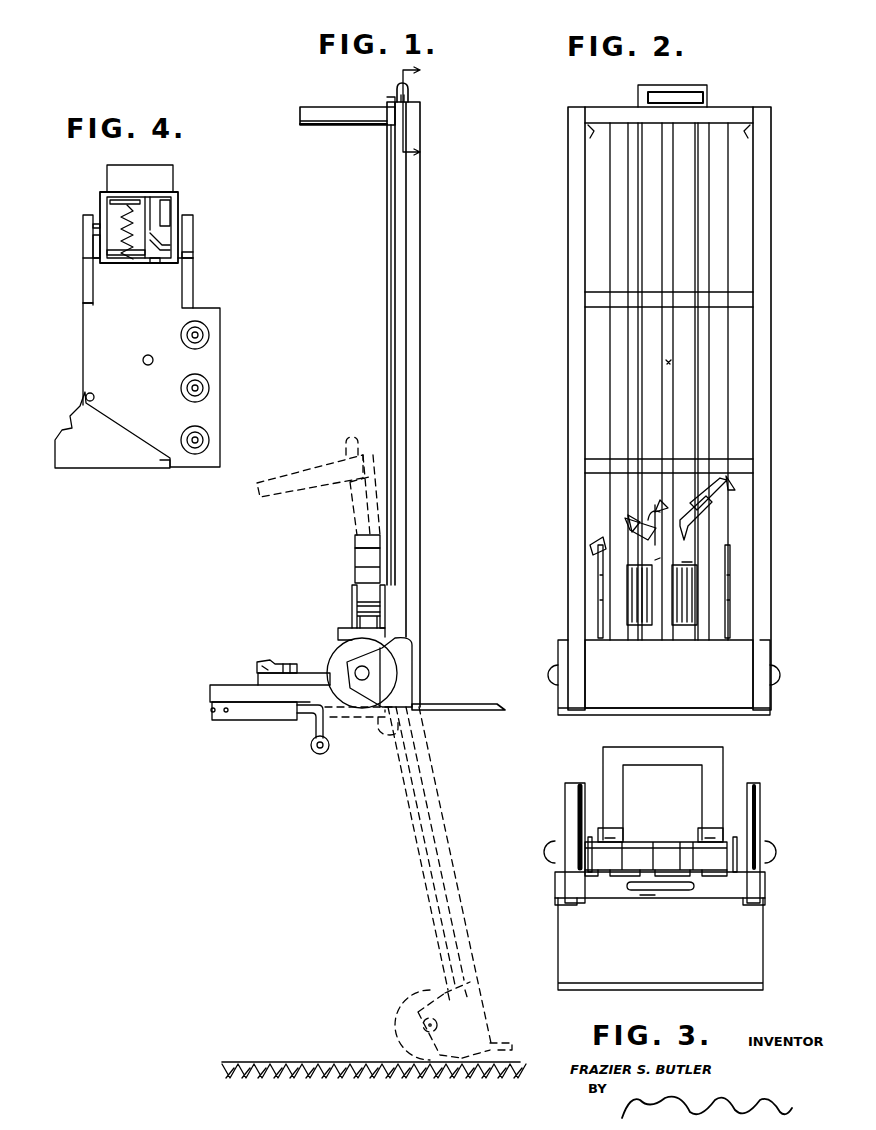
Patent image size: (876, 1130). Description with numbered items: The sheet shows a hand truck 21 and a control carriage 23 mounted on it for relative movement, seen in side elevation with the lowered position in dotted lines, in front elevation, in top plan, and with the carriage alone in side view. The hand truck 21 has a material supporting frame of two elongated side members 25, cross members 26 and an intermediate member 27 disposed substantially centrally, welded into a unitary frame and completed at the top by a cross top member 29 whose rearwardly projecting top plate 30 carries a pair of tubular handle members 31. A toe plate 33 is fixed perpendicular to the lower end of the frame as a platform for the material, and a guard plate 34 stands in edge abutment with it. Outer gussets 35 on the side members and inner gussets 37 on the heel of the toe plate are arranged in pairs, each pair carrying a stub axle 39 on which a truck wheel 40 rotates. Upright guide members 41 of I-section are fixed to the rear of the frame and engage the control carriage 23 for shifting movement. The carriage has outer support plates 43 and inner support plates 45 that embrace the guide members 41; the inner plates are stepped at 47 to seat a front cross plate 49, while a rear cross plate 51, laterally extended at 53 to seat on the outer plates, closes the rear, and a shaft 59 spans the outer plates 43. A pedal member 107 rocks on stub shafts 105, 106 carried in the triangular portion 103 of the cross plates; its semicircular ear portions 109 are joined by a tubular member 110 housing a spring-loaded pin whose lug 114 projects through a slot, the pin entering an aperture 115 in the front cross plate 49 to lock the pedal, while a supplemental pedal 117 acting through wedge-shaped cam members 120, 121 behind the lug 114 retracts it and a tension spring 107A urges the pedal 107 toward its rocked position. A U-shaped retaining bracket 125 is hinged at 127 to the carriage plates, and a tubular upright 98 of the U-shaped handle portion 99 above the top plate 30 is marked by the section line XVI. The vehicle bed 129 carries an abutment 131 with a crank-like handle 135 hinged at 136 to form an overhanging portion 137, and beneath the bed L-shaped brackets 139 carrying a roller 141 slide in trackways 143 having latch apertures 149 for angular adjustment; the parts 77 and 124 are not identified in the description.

In FIG. 1, the hand truck 21 is at (477, 289).
In FIG. 2, the hand truck 21 is at (786, 277).
In FIG. 1, the control carriage 23 is at (349, 587).
In FIG. 4, the control carriage 23 is at (250, 350).
In FIG. 1, the side members 25 is at (414, 223).
In FIG. 2, the side members 25 is at (569, 187).
In FIG. 3, the side members 25 is at (562, 905).
In FIG. 2, the cross members 26 is at (590, 308).
In FIG. 2, the intermediate elongated member 27 is at (668, 390).
In FIG. 2, the cross top member 29 is at (726, 116).
In FIG. 1, the top plate 30 is at (397, 96).
In FIG. 3, the top plate 30 is at (605, 895).
In FIG. 1, the handle members 31 is at (312, 126).
In FIG. 2, the handle members 31 is at (590, 127).
In FIG. 3, the handle members 31 is at (570, 793).
In FIG. 1, the toe plate 33 is at (452, 705).
In FIG. 2, the toe plate 33 is at (757, 714).
In FIG. 3, the toe plate 33 is at (752, 950).
In FIG. 2, the guard plate 34 is at (663, 679).
In FIG. 1, the outer gussets 35 is at (408, 655).
In FIG. 2, the outer gussets 35 is at (557, 650).
In FIG. 3, the outer gussets 35 is at (556, 875).
In FIG. 3, the inner gussets 37 is at (590, 835).
In FIG. 3, the stub axle 39 is at (556, 844).
In FIG. 1, the truck wheel 40 is at (340, 655).
In FIG. 3, the truck wheel 40 is at (585, 840).
In FIG. 1, the upright guide members 41 is at (400, 258).
In FIG. 2, the upright guide members 41 is at (618, 252).
In FIG. 1, the outer support plates 43 is at (340, 637).
In FIG. 2, the outer support plates 43 is at (604, 567).
In FIG. 3, the outer support plates 43 is at (612, 828).
In FIG. 4, the outer support plates 43 is at (183, 292).
In FIG. 2, the inner support plates 45 is at (630, 636).
In FIG. 3, the inner support plates 45 is at (628, 840).
In FIG. 4, the stepped portion 47 is at (210, 305).
In FIG. 1, the front cross plate 49 is at (378, 613).
In FIG. 2, the front cross plate 49 is at (688, 555).
In FIG. 3, the front cross plate 49 is at (710, 878).
In FIG. 4, the front cross plate 49 is at (192, 247).
In FIG. 1, the rear cross plate 51 is at (352, 603).
In FIG. 3, the rear cross plate 51 is at (672, 842).
In FIG. 4, the rear cross plate 51 is at (86, 243).
In FIG. 4, the lateral extension 53 is at (84, 312).
In FIG. 4, the shaft 59 is at (146, 364).
In FIG. 2, the roller axle 77 is at (652, 555).
In FIG. 1, the tubular uprights 98 is at (410, 97).
In FIG. 2, the tubular uprights 98 is at (705, 94).
In FIG. 1, the U-shaped handle portion 99 is at (423, 88).
In FIG. 2, the U-shaped handle portion 99 is at (704, 80).
In FIG. 3, the U-shaped handle portion 99 is at (680, 891).
In FIG. 3, the triangular portion 103 is at (648, 892).
In FIG. 4, the stub shaft 105 is at (182, 233).
In FIG. 4, the stub shaft 106 is at (98, 225).
In FIG. 1, the pedal member 107 is at (355, 546).
In FIG. 2, the pedal member 107 is at (735, 487).
In FIG. 3, the pedal member 107 is at (598, 858).
In FIG. 4, the tension spring 107A is at (123, 212).
In FIG. 2, the ear portions 109 is at (688, 527).
In FIG. 4, the ear portions 109 is at (105, 210).
In FIG. 4, the tubular cylindrical member 110 is at (103, 256).
In FIG. 4, the lug 114 is at (140, 258).
In FIG. 2, the aperture 115 is at (640, 512).
In FIG. 4, the aperture 115 is at (195, 255).
In FIG. 1, the supplemental pedal 117 is at (355, 566).
In FIG. 2, the supplemental pedal 117 is at (657, 510).
In FIG. 3, the supplemental pedal 117 is at (628, 862).
In FIG. 4, the supplemental pedal 117 is at (163, 174).
In FIG. 4, the wedge-shaped cam member 120 is at (178, 195).
In FIG. 4, the wedge-shaped cam member 121 is at (160, 264).
In FIG. 4, the side wall 124 is at (97, 250).
In FIG. 1, the retaining bracket 125 is at (308, 672).
In FIG. 3, the retaining bracket 125 is at (716, 770).
In FIG. 4, the retaining bracket 125 is at (74, 447).
In FIG. 4, the hinge connection 127 is at (86, 392).
In FIG. 1, the vehicle bed 129 is at (210, 690).
In FIG. 1, the abutment 131 is at (252, 653).
In FIG. 1, the handle 135 is at (292, 663).
In FIG. 1, the hinged connection 136 is at (262, 668).
In FIG. 1, the overhanging portion 137 is at (258, 664).
In FIG. 1, the L-shaped brackets 139 is at (322, 732).
In FIG. 1, the roller 141 is at (324, 752).
In FIG. 1, the trackways 143 is at (262, 712).
In FIG. 1, the latch apertures 149 is at (208, 710).
In FIG. 1, the section line XVI is at (426, 112).